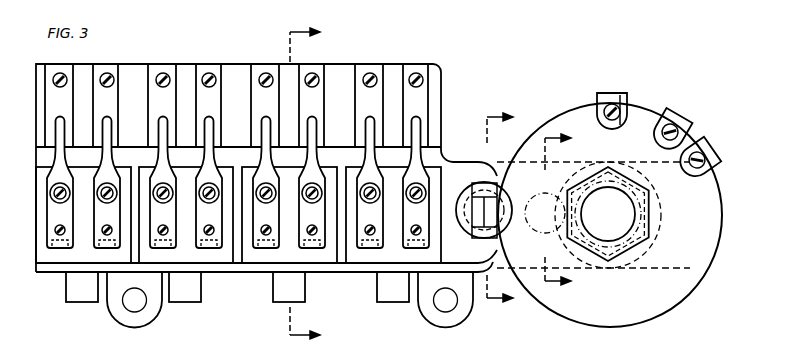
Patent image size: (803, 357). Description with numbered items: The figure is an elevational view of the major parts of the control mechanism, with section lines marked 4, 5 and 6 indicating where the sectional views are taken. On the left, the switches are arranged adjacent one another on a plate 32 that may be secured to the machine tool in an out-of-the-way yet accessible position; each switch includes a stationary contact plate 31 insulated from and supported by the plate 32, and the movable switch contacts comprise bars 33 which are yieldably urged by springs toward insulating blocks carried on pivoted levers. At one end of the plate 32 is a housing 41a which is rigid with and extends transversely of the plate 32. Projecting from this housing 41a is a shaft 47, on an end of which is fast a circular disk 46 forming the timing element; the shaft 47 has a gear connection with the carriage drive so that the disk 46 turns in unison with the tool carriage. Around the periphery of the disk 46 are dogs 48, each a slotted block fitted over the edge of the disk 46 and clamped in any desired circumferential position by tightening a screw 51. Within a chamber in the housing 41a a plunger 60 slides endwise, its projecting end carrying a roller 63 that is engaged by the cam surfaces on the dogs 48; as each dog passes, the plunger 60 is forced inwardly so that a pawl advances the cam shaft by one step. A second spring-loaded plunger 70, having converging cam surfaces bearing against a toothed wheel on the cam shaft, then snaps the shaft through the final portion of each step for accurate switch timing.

The stationary contact plate 31 is at (155, 69).
The plate 32 is at (438, 78).
The bars 33 is at (163, 121).
The housing 41a is at (478, 164).
The circular disk 46 is at (606, 326).
The shaft 47 is at (644, 215).
The dogs 48 is at (626, 96).
The screw 51 is at (627, 121).
The plunger 60 is at (466, 241).
The roller 63 is at (482, 208).
The plunger 70 is at (540, 233).
The section line 4- 4 is at (313, 185).
The section line 5- 5 is at (565, 210).
The section line 6- 6 is at (507, 208).